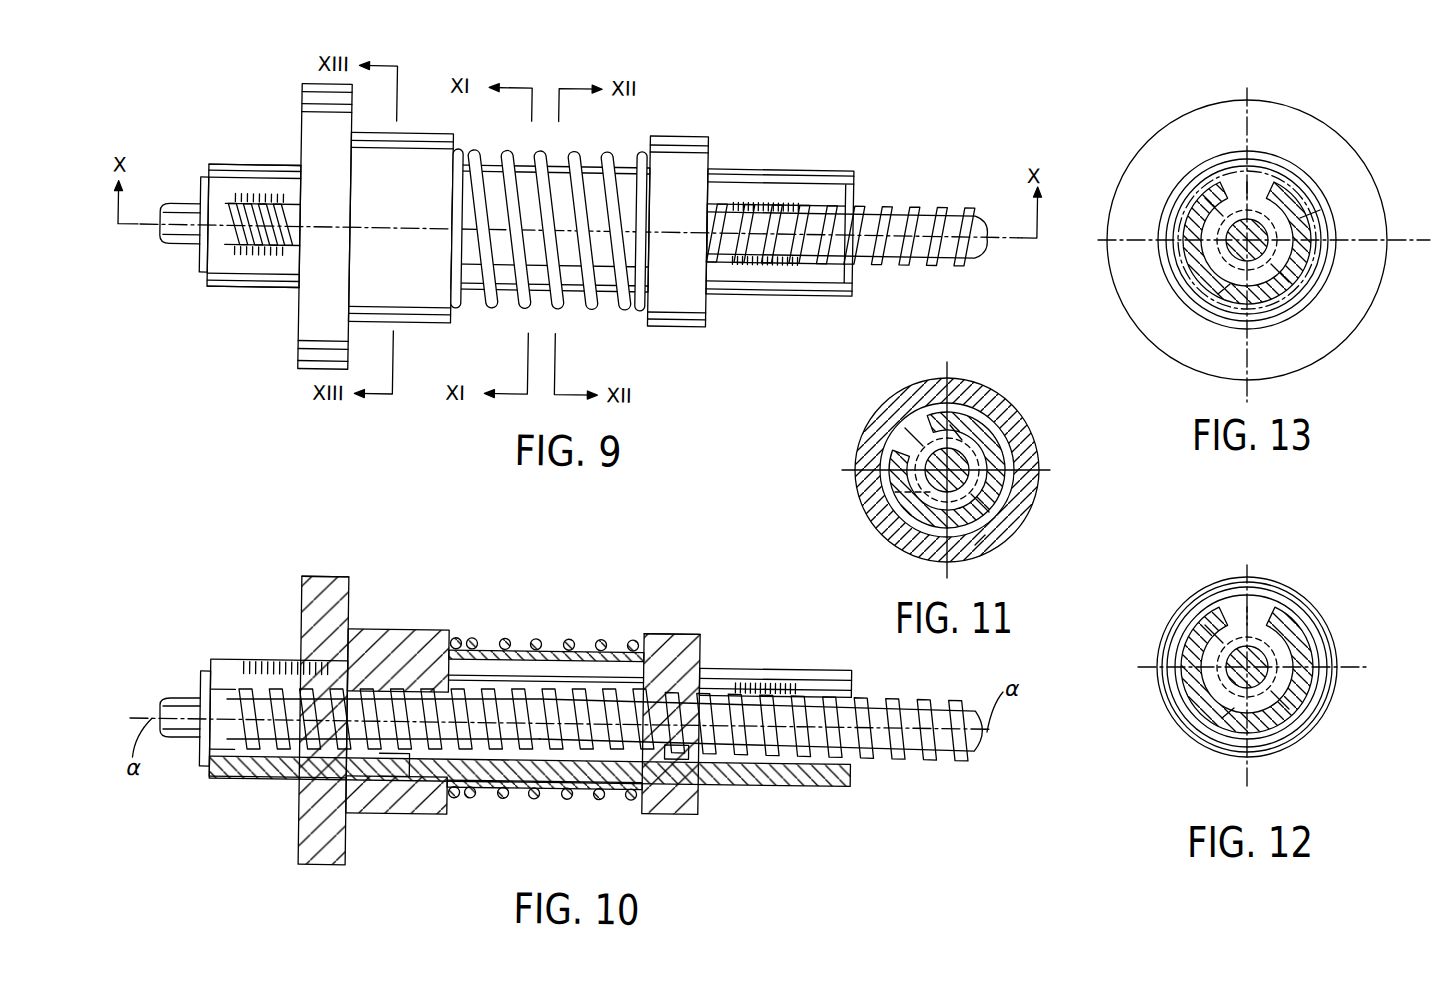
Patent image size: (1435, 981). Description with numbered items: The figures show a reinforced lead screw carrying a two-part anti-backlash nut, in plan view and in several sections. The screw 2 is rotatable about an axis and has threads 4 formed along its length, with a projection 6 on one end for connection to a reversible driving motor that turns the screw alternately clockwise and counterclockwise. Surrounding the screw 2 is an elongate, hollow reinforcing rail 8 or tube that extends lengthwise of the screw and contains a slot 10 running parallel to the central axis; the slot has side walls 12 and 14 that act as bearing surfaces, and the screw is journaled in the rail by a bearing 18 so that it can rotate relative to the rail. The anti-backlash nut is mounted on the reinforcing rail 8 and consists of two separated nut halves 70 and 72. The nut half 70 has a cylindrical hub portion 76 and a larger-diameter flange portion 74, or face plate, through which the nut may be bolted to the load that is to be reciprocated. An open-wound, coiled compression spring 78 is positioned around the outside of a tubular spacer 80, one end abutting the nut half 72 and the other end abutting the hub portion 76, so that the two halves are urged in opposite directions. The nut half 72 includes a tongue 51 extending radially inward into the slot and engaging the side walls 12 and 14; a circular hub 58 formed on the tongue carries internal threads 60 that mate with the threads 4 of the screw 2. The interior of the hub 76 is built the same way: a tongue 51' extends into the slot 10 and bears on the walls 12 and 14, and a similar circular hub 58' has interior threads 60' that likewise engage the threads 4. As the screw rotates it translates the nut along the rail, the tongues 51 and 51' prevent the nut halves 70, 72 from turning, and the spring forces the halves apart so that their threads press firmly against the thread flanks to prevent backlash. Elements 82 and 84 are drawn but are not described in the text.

In FIG. 10, the screw 2 is at (969, 769).
In FIG. 11, the screw 2 is at (920, 507).
In FIG. 13, the screw 2 is at (1225, 253).
In FIG. 12, the screw 2 is at (1187, 653).
In FIG. 9, the threads 4 is at (917, 253).
In FIG. 10, the threads 4 is at (692, 686).
In FIG. 10, the projection 6 is at (181, 697).
In FIG. 9, the reinforcing rail 8 is at (844, 159).
In FIG. 10, the reinforcing rail 8 is at (785, 777).
In FIG. 9, the slot 10 is at (238, 214).
In FIG. 9, the side wall 12 is at (811, 197).
In FIG. 10, the side wall 12 is at (822, 661).
In FIG. 11, the side wall 12 is at (980, 402).
In FIG. 13, the side wall 12 is at (1267, 175).
In FIG. 12, the side wall 12 is at (1225, 598).
In FIG. 9, the side wall 14 is at (810, 250).
In FIG. 11, the side wall 14 is at (920, 420).
In FIG. 13, the side wall 14 is at (1230, 173).
In FIG. 12, the side wall 14 is at (1277, 600).
In FIG. 10, the bearing 18 is at (204, 747).
In FIG. 12, the tongue 51 is at (1269, 572).
In FIG. 11, the tongue 51' is at (981, 390).
In FIG. 13, the tongue 51' is at (1284, 133).
In FIG. 12, the circular hub 58 is at (1208, 748).
In FIG. 11, the circular hub 58' is at (1013, 555).
In FIG. 13, the circular hub 58' is at (1212, 328).
In FIG. 12, the internal threads 60 is at (1265, 670).
In FIG. 11, the interior threads 60' is at (860, 489).
In FIG. 13, the interior threads 60' is at (1365, 191).
In FIG. 9, the nut half 70 is at (272, 322).
In FIG. 10, the nut half 70 is at (376, 829).
In FIG. 9, the nut half 72 is at (735, 125).
In FIG. 10, the nut half 72 is at (684, 622).
In FIG. 12, the nut half 72 is at (1293, 745).
In FIG. 9, the flange portion 74 is at (338, 189).
In FIG. 10, the flange portion 74 is at (322, 574).
In FIG. 13, the flange portion 74 is at (1367, 333).
In FIG. 9, the cylindrical hub portion 76 is at (411, 189).
In FIG. 10, the cylindrical hub portion 76 is at (405, 626).
In FIG. 11, the cylindrical hub portion 76 is at (1033, 435).
In FIG. 9, the coiled compression spring 78 is at (576, 141).
In FIG. 10, the coiled compression spring 78 is at (532, 632).
In FIG. 12, the coiled compression spring 78 is at (1317, 615).
In FIG. 9, the tubular spacer 80 is at (570, 296).
In FIG. 10, the tubular spacer 80 is at (588, 646).
In FIG. 13, the tubular spacer 80 is at (1180, 230).
In FIG. 12, the tubular spacer 80 is at (1190, 697).
In FIG. 10, the retainer 82 is at (688, 744).
In FIG. 10, the locking member 84 is at (392, 752).